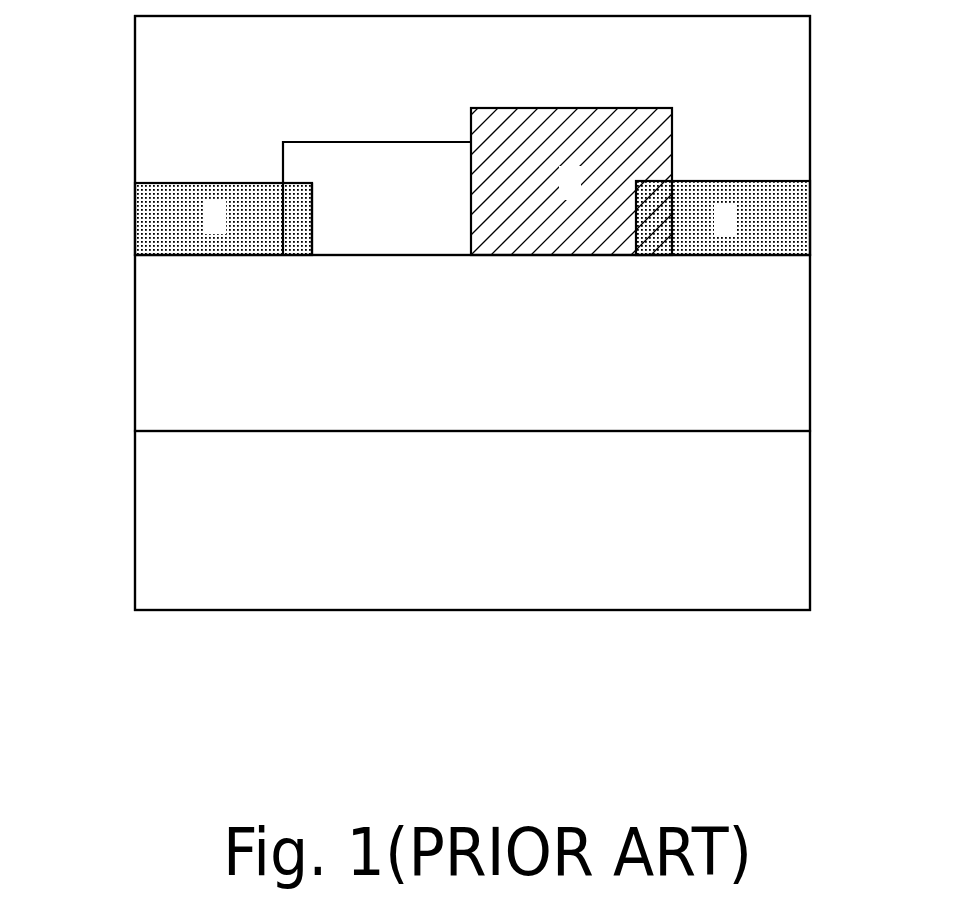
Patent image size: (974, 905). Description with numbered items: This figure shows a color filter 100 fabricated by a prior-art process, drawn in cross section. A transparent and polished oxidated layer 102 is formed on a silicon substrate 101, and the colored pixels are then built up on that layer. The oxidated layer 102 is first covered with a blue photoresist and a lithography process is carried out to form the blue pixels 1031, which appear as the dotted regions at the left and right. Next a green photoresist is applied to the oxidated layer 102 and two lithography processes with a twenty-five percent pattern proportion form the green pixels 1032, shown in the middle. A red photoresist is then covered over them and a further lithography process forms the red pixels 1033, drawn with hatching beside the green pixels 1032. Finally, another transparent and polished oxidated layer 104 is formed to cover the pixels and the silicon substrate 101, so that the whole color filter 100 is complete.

The color filter 100 is at (817, 743).
The silicon substrate 101 is at (765, 552).
The oxidated layer 102 is at (765, 375).
The oxidated layer 104 is at (765, 113).
The blue pixels 1031 is at (168, 228).
The green pixels 1032 is at (405, 163).
The red pixels 1033 is at (562, 157).